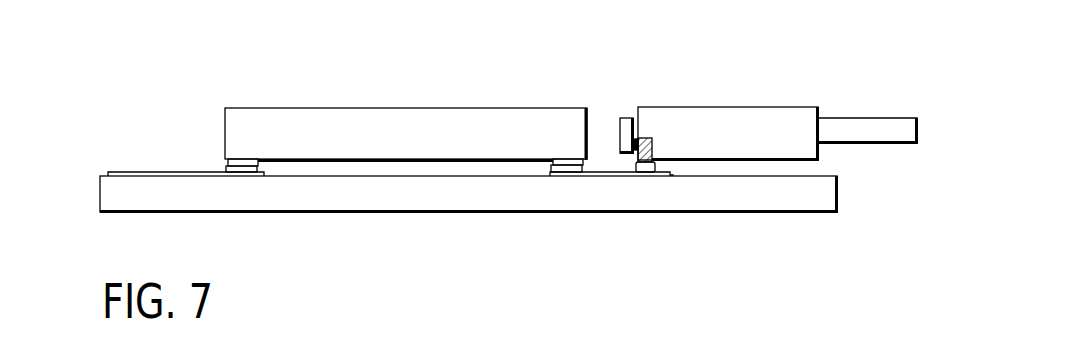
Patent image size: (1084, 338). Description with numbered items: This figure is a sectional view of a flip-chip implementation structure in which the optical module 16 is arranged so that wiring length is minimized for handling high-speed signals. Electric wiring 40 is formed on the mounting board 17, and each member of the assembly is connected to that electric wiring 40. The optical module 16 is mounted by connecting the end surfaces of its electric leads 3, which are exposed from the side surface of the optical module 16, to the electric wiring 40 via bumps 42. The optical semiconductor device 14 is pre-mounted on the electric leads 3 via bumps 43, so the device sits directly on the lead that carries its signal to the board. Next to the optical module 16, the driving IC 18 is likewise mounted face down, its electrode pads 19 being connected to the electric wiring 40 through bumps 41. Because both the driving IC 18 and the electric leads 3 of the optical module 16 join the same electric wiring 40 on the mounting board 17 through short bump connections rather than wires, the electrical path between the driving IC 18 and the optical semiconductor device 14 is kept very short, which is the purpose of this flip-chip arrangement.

The electric leads 3 is at (645, 137).
The optical semiconductor device 14 is at (627, 117).
The optical module 16 is at (750, 118).
The mounting board 17 is at (198, 197).
The driving IC 18 is at (291, 118).
The electrode pads 19 is at (560, 158).
The electric wiring 40 is at (152, 171).
The bumps 41 is at (241, 173).
The bumps 42 is at (646, 173).
The bumps 43 is at (636, 138).